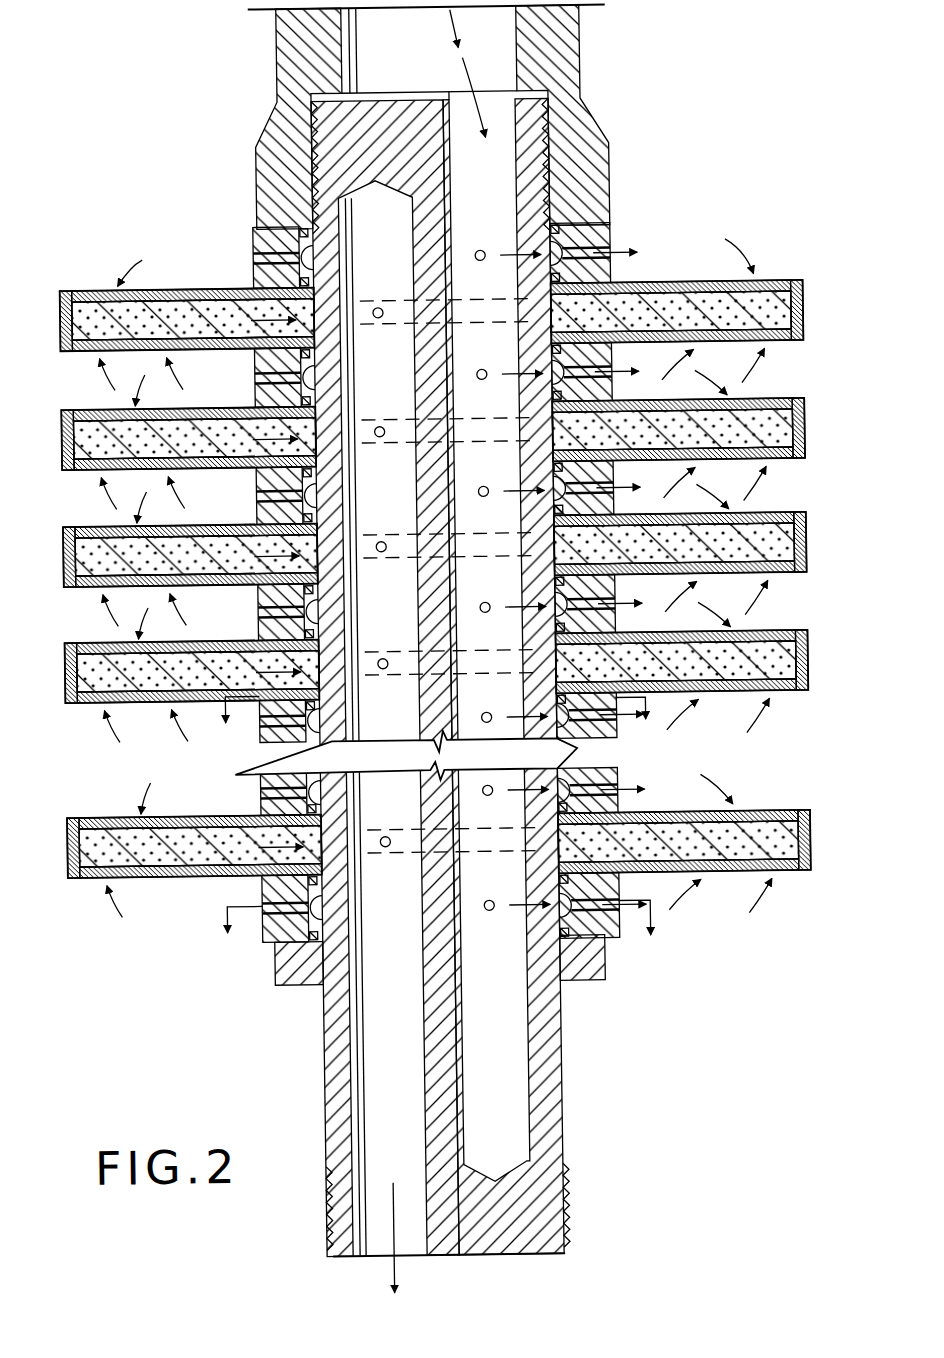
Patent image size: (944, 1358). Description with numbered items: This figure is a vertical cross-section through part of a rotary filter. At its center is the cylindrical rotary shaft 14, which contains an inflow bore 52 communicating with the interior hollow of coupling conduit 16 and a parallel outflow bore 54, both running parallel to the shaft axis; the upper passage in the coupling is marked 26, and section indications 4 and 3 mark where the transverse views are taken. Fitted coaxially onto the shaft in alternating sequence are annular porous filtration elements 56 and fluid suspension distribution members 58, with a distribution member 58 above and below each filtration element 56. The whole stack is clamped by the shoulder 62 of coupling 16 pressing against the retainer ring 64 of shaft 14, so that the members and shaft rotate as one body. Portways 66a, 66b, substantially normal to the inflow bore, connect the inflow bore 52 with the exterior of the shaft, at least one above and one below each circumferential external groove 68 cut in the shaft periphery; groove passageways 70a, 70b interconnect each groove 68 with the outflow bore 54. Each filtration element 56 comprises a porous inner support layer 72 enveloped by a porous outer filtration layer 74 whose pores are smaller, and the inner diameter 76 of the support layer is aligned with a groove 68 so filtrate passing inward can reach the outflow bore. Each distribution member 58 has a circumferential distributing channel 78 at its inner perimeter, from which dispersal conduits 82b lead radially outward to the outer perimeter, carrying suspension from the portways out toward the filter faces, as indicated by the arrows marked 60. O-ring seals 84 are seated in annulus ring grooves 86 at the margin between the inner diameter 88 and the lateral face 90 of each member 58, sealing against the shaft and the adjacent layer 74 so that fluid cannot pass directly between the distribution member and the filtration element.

The rotary shaft 14 is at (371, 148).
The coupling conduit 16 is at (312, 40).
The inlet passage 26 is at (455, 55).
The inflow bore 52 is at (500, 173).
The outflow bore 54 is at (398, 1046).
The annular porous filtration element 56 is at (112, 284).
The fluid suspension distribution member 58 is at (258, 238).
The inlet port 60 is at (540, 302).
The shoulder 62 is at (612, 236).
The retainer ring 64 is at (270, 962).
The portway 66a is at (485, 262).
The portway 66b is at (528, 256).
The circumferential external groove 68 is at (305, 287).
The groove passageway 70a is at (382, 306).
The groove passageway 70b is at (363, 300).
The porous inner support layer 72 is at (775, 314).
The porous outer filtration layer 74 is at (778, 283).
The inner diameter 76 is at (550, 428).
The circumferential distributing channel 78 is at (617, 273).
The dispersal conduit 82b is at (617, 256).
The O-ring seal 84 is at (550, 350).
The annulus ring groove 86 is at (550, 418).
The inner diameter 88 is at (311, 237).
The lateral face 90 is at (580, 300).
The section line 4 is at (436, 722).
The section line 3 is at (435, 936).